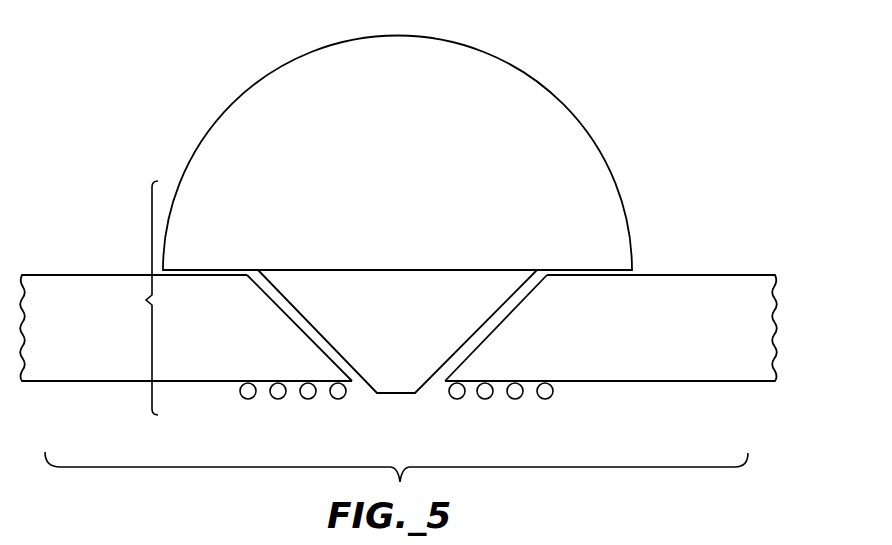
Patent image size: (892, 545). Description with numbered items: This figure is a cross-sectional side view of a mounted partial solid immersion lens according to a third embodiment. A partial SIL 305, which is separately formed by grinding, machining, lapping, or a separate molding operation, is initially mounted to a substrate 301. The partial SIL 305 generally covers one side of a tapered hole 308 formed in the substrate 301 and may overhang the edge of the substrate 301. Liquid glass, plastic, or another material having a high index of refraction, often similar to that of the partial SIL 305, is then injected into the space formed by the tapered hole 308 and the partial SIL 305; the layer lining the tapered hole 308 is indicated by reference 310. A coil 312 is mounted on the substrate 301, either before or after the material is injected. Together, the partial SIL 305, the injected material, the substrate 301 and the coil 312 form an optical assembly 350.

The substrate 301 is at (668, 328).
The partial SIL 305 is at (418, 170).
The tapered hole 308 is at (291, 322).
The reflective layer 310 is at (328, 340).
The coil 312 is at (542, 383).
The optical assembly 350 is at (396, 331).